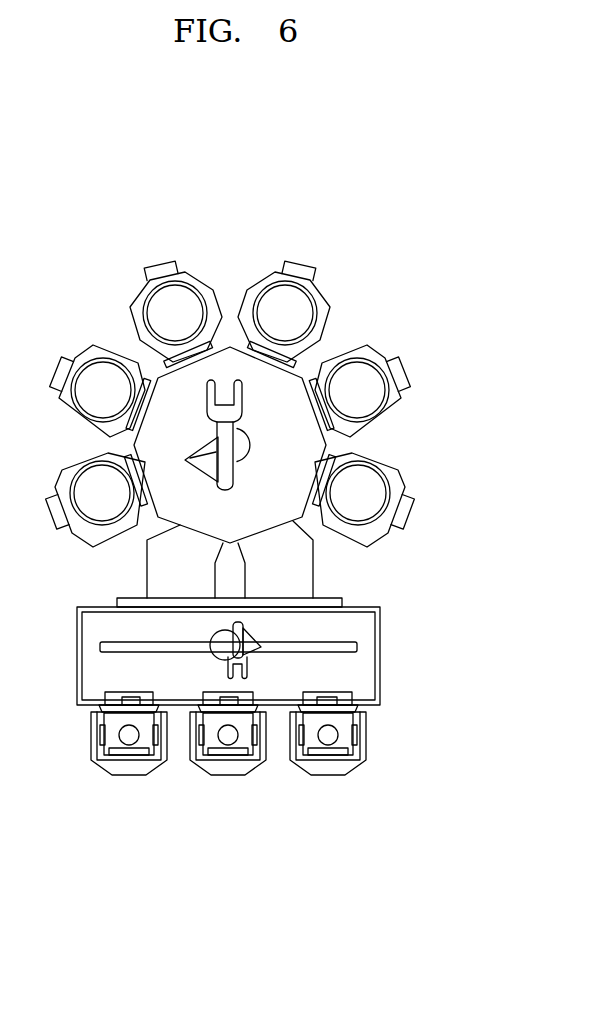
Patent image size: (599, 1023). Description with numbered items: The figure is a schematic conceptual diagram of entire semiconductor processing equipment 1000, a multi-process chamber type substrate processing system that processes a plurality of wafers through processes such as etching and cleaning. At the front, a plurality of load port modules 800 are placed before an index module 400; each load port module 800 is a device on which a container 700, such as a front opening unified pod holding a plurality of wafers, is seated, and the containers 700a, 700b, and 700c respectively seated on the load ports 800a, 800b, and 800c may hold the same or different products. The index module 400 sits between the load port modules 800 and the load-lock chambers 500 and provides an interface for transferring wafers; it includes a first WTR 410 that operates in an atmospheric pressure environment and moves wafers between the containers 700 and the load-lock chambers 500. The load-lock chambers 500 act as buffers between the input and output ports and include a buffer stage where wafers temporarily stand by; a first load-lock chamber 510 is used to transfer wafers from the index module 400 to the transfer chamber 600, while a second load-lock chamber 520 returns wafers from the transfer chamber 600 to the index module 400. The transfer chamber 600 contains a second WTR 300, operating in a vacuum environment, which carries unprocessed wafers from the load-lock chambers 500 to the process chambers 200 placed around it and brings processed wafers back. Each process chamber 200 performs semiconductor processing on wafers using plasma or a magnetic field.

The semiconductor processing equipment 1000 is at (257, 223).
The process chamber 200 is at (377, 353).
The second WTR 300 is at (262, 447).
The index module 400 is at (380, 636).
The first WTR 410 is at (272, 666).
The load-lock chamber 500 is at (331, 565).
The first load-lock chamber 510 is at (197, 570).
The second load-lock chamber 520 is at (300, 588).
The transfer chamber 600 is at (150, 526).
The container 700 is at (465, 700).
The container 700a is at (340, 746).
The container 700b is at (318, 733).
The container 700c is at (250, 722).
The load port module 800 is at (312, 840).
The load port 800a is at (135, 768).
The load port 800b is at (227, 768).
The load port 800c is at (356, 767).